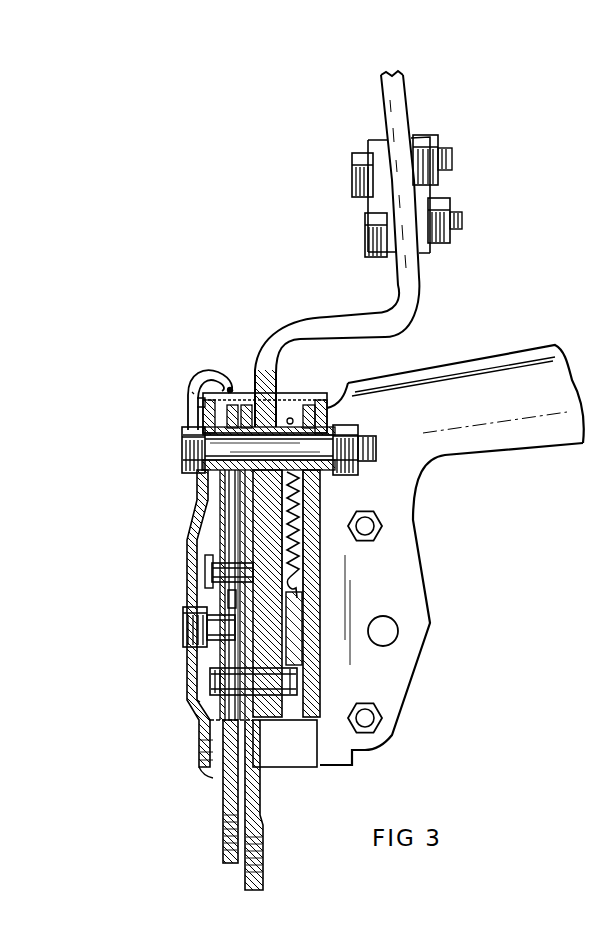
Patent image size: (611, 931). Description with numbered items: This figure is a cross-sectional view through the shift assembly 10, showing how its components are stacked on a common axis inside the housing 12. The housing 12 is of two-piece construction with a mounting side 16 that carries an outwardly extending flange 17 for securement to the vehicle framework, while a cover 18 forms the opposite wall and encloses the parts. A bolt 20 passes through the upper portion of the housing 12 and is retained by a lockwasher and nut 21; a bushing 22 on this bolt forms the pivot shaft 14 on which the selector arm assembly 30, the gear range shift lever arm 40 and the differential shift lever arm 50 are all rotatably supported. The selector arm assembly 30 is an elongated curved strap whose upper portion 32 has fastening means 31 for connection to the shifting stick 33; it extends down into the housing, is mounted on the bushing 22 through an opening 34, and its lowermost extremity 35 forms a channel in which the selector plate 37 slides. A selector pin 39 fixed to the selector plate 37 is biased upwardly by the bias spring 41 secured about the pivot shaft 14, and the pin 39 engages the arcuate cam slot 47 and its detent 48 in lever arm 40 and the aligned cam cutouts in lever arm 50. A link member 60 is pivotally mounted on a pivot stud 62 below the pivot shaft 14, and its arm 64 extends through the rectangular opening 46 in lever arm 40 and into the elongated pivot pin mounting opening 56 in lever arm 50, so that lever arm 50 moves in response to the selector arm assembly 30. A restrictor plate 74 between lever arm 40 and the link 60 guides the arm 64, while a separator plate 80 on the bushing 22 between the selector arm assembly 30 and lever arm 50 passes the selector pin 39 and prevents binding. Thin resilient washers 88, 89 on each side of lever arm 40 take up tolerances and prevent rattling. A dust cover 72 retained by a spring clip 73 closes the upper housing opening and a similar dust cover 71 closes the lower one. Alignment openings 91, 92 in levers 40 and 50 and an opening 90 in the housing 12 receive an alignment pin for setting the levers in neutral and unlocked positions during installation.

The shift assembly 10 is at (268, 313).
The housing 12 is at (192, 682).
The pivot shaft 14 is at (190, 440).
The mounting side 16 is at (325, 575).
The flange 17 is at (535, 437).
The cover 18 is at (205, 590).
The bolt 20 is at (378, 446).
The nut 21 is at (345, 428).
The bushing 22 is at (312, 395).
The selector arm assembly 30 is at (254, 344).
The fastening means 31 is at (448, 152).
The upper portion 32 is at (410, 290).
The shifting stick 33 is at (400, 103).
The opening 34 is at (250, 407).
The lowermost extremity of the selector arm 35 is at (299, 607).
The selector plate 37 is at (290, 658).
The selector pin 39 is at (282, 682).
The gear range shift lever arm 40 is at (188, 378).
The bias spring 41 is at (298, 517).
The central rectangular opening 46 is at (232, 598).
The cam slot 47 is at (200, 700).
The detent 48 is at (205, 653).
The differential shift lever arm 50 is at (265, 860).
The pivot pin mounting opening 56 is at (220, 541).
The link member 60 is at (205, 773).
The pivot stud 62 is at (215, 628).
The arm 64 is at (205, 570).
The dust cover 71 is at (298, 727).
The dust cover 72 is at (286, 415).
The spring clip 73 is at (192, 392).
The restrictor plate 74 is at (232, 528).
The separator plate 80 is at (248, 502).
The resilient washer 88 is at (232, 390).
The resilient washer 89 is at (190, 410).
The alignment opening 90 is at (200, 752).
The alignment opening 91 is at (213, 770).
The alignment opening 92 is at (252, 747).